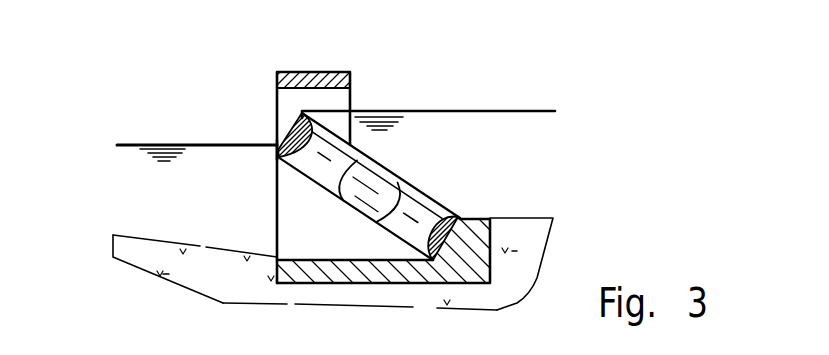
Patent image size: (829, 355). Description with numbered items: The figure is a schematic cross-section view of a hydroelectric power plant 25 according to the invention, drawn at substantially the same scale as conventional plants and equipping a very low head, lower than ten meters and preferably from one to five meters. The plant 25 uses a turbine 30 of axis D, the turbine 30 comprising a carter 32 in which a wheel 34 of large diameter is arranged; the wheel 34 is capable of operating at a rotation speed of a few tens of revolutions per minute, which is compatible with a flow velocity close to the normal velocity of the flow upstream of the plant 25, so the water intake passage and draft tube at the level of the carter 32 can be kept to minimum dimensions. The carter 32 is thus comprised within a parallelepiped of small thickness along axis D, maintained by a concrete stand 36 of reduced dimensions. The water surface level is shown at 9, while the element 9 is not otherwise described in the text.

The liquid level 9 is at (150, 198).
The hydroelectric power plant 25 is at (389, 66).
The turbine 30 is at (398, 236).
The carter 32 is at (289, 143).
The wheel 34 is at (331, 170).
The concrete stand 36 is at (318, 262).
The axis D is at (331, 246).